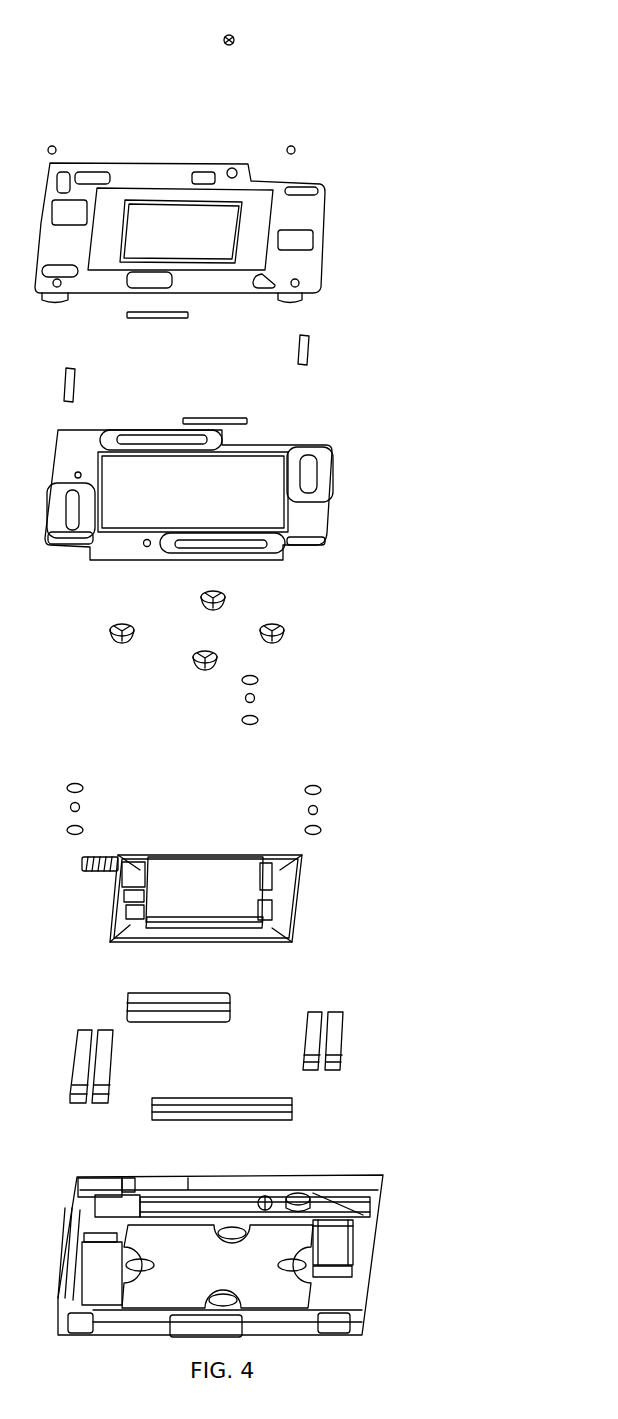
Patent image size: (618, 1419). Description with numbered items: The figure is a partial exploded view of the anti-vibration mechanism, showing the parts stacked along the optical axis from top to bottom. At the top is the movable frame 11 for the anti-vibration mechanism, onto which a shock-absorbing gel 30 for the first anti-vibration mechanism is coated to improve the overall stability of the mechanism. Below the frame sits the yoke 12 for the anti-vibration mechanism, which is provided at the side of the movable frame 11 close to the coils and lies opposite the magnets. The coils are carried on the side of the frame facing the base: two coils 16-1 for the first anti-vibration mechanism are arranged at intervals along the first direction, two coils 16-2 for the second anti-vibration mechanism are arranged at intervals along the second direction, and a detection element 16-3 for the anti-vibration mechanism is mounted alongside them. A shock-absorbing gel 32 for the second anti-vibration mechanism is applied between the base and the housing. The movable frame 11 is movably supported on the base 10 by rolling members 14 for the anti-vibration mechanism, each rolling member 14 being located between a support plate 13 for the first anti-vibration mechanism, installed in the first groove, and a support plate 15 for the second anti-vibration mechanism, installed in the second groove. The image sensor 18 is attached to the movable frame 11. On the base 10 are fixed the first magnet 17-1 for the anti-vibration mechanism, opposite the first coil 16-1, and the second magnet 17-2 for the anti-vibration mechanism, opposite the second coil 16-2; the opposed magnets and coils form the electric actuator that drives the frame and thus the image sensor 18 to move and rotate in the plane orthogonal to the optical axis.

The shock-absorbing gel for the first anti-vibration mechanism 30 is at (470, 18).
The movable frame for the anti-vibration mechanism 11 is at (494, 317).
The yoke for the anti-vibration mechanism 12 is at (471, 413).
The coil for the second anti-vibration mechanism 16-2 is at (470, 472).
The detection element for the anti-vibration mechanism 16-3 is at (394, 515).
The coil for the first anti-vibration mechanism 16-1 is at (484, 582).
The shock-absorbing gel for the second anti-vibration mechanism 32 is at (436, 678).
The support plate for the first anti-vibration mechanism 13 is at (431, 770).
The rolling member for the anti-vibration mechanism 14 is at (431, 822).
The support plate for the second anti-vibration mechanism 15 is at (424, 863).
The image sensor 18 is at (431, 952).
The first magnet for the anti-vibration mechanism 17-1 is at (464, 1062).
The second magnet for the anti-vibration mechanism 17-2 is at (436, 1132).
The base 10 is at (528, 1295).